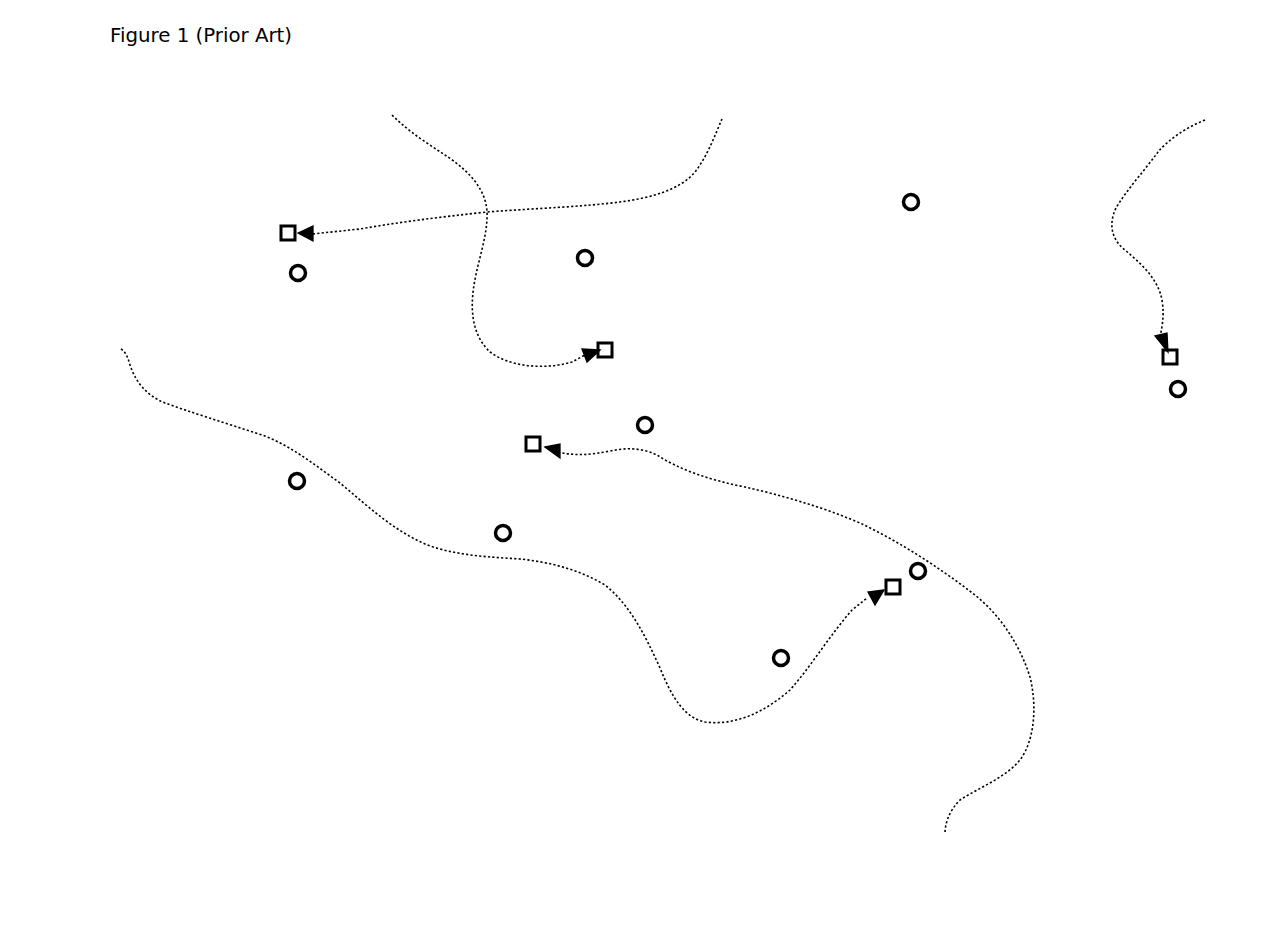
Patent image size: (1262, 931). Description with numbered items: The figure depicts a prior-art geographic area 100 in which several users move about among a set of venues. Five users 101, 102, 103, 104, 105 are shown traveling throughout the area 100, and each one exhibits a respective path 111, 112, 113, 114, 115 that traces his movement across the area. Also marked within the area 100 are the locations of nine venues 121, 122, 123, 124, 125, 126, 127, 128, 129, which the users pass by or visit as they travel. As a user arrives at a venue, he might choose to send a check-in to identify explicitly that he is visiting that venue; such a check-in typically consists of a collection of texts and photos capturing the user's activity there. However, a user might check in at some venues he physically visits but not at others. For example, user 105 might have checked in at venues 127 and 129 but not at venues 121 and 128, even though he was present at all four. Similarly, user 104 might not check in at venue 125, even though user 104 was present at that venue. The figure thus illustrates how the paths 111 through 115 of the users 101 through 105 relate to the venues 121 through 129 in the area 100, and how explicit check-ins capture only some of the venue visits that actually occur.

The geographic area 100 is at (228, 138).
The user 101 is at (294, 226).
The user 102 is at (539, 437).
The user 103 is at (600, 343).
The user 104 is at (1176, 350).
The user 105 is at (899, 594).
The path 111 is at (705, 148).
The path 112 is at (1014, 632).
The path 113 is at (439, 149).
The path 114 is at (1136, 178).
The path 115 is at (190, 408).
The venue 121 is at (292, 490).
The venue 122 is at (304, 266).
The venue 123 is at (591, 251).
The venue 124 is at (917, 196).
The venue 125 is at (1184, 382).
The venue 126 is at (651, 418).
The venue 127 is at (509, 527).
The venue 128 is at (775, 652).
The venue 129 is at (912, 563).